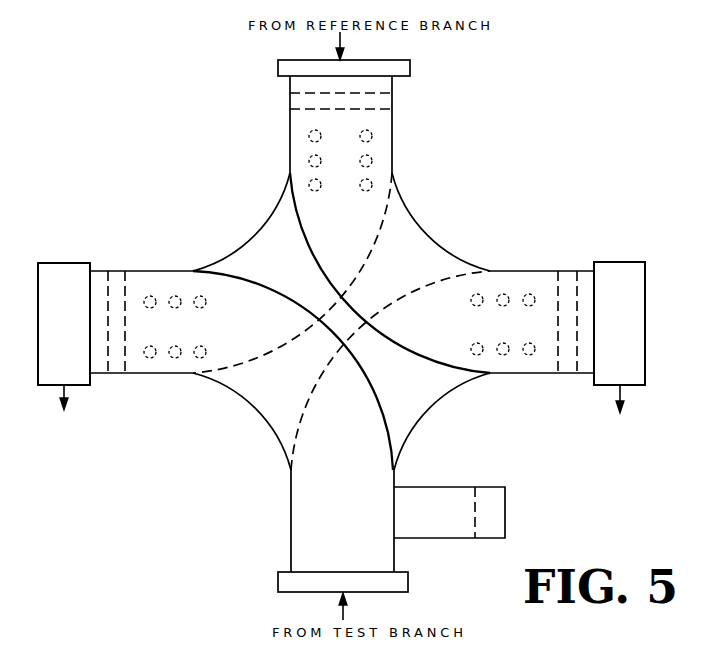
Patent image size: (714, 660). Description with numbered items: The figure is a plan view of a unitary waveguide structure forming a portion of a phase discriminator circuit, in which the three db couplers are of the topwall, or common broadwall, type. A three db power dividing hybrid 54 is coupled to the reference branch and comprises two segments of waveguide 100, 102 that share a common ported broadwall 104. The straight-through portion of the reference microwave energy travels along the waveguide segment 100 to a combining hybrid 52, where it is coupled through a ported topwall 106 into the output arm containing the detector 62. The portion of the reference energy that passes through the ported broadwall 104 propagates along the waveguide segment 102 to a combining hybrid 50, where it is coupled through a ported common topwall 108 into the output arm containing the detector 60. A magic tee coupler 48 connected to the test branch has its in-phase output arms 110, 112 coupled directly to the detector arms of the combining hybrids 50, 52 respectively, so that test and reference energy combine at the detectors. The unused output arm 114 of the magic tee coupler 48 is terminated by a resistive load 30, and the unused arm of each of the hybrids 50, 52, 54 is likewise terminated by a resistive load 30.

The resistive load 30 is at (290, 104).
The magic tee coupler 48 is at (283, 519).
The combining hybrid 50 is at (174, 268).
The combining hybrid 52 is at (478, 262).
The 3 db power dividing hybrid 54 is at (402, 136).
The detector 60 is at (53, 263).
The detector 62 is at (645, 312).
The waveguide segment 100 is at (406, 211).
The waveguide segment 102 is at (281, 205).
The common ported broadwall 104 is at (355, 170).
The ported topwall 106 is at (522, 335).
The ported common topwall 108 is at (192, 333).
The in-phase output arm 110 is at (290, 487).
The in-phase output arm 112 is at (452, 388).
The unused output arm 114 is at (403, 486).